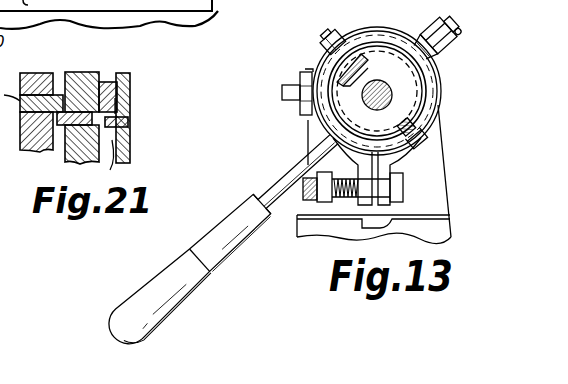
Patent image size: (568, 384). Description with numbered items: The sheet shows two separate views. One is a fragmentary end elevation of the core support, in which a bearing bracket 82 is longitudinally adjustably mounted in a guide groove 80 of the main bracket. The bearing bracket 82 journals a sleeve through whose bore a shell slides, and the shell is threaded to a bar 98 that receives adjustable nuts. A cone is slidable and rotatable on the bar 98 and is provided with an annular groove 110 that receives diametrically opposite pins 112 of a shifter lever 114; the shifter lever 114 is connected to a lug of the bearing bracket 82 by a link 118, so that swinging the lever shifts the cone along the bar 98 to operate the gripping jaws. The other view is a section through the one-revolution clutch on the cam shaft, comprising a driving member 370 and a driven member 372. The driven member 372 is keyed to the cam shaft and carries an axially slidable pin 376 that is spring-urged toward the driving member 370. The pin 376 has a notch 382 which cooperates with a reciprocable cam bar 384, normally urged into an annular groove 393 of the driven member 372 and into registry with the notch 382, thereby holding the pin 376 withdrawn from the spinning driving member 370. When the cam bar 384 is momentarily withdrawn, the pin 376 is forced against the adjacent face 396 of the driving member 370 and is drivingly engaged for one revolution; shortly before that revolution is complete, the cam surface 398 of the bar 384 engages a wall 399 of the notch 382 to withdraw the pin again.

In FIG. 21, the driving member 370 is at (63, 63).
In FIG. 21, the driven member 372 is at (141, 63).
In FIG. 21, the pin 376 is at (57, 150).
In FIG. 21, the notch 382 is at (103, 140).
In FIG. 21, the cam bar 384 is at (122, 92).
In FIG. 21, the annular groove 393 is at (131, 158).
In FIG. 21, the face 396 is at (52, 148).
In FIG. 21, the cam surface 398 is at (120, 100).
In FIG. 21, the wall 399 is at (130, 120).
In FIG. 13, the guide groove 80 is at (385, 228).
In FIG. 13, the bearing bracket 82 is at (445, 187).
In FIG. 13, the bar 98 is at (385, 100).
In FIG. 13, the annular groove 110 is at (358, 56).
In FIG. 13, the pins 112 is at (335, 70).
In FIG. 13, the shifter lever 114 is at (282, 180).
In FIG. 13, the link 118 is at (459, 22).